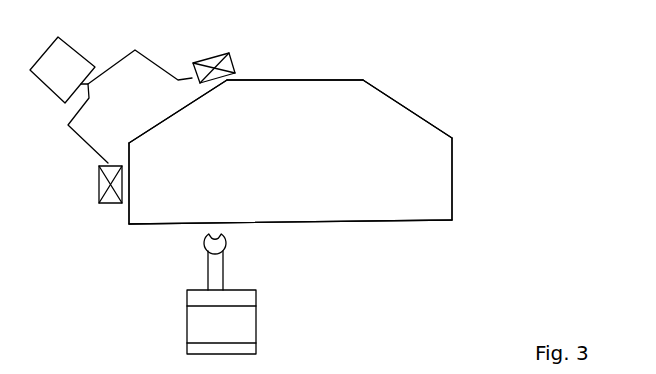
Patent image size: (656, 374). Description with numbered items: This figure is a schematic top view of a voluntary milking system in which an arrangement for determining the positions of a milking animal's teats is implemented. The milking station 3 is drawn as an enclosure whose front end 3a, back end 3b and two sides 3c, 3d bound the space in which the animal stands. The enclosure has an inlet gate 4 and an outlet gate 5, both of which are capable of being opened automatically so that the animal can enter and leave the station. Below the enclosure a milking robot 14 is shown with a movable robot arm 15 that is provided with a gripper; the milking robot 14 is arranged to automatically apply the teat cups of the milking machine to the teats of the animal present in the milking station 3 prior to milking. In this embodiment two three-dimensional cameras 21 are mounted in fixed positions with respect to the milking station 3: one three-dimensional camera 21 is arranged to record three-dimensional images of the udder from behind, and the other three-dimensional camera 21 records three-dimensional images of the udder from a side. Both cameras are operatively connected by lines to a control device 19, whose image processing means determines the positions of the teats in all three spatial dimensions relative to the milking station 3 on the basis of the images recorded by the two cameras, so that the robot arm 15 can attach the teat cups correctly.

The milking station 3 is at (463, 106).
The front end 3a is at (453, 175).
The back end 3b is at (128, 150).
The side 3c is at (290, 80).
The side 3d is at (372, 222).
The inlet gate 4 is at (173, 112).
The outlet gate 5 is at (385, 93).
The milking robot 14 is at (187, 320).
The robot arm 15 is at (223, 268).
The control device 19 is at (78, 48).
The three-dimensional camera 21 is at (212, 55).